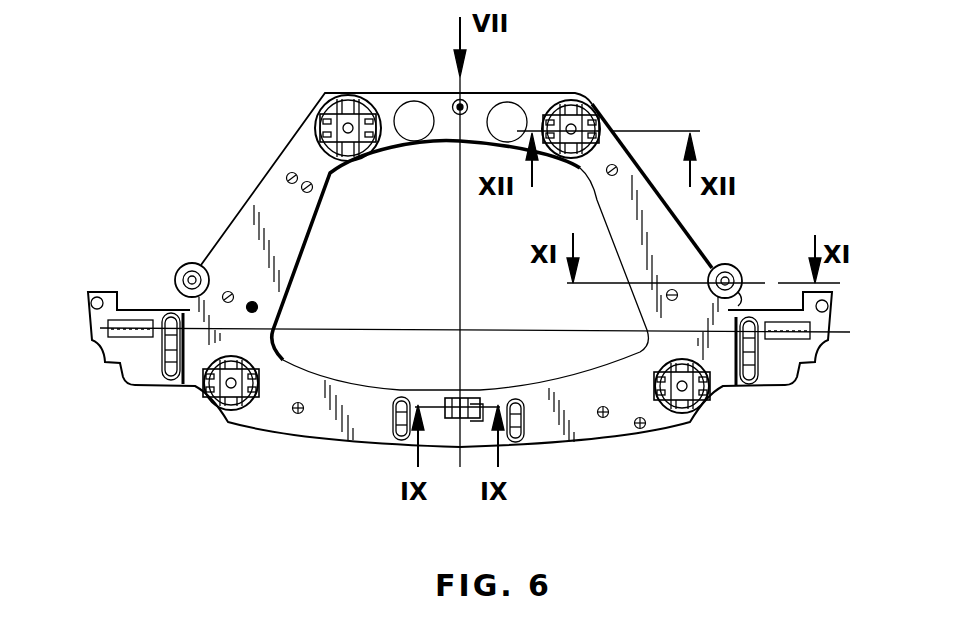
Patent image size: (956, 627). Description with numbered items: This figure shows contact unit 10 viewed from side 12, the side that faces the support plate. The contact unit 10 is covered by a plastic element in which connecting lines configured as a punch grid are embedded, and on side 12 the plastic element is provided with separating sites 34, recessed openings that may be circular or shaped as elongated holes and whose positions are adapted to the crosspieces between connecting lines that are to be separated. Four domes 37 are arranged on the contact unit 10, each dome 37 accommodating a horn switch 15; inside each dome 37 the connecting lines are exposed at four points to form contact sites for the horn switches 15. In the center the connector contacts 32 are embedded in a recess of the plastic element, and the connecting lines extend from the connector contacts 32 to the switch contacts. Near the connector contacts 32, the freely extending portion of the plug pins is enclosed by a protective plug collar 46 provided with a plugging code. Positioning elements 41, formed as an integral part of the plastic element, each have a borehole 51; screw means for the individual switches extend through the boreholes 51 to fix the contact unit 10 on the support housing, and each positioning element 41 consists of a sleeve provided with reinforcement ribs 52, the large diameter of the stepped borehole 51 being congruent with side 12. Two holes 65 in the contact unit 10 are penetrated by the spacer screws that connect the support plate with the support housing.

The contact unit 10 is at (774, 191).
The side of contact unit facing support plate 12 is at (668, 221).
The horn switch 15 is at (366, 115).
The connector contacts 32 is at (452, 420).
The separating sites 34 is at (290, 176).
The dome 37 is at (347, 103).
The positioning element 41 is at (176, 264).
The protective plug collar 46 is at (472, 422).
The borehole 51 is at (186, 262).
The reinforcement ribs 52 is at (742, 294).
The holes 65 is at (434, 118).